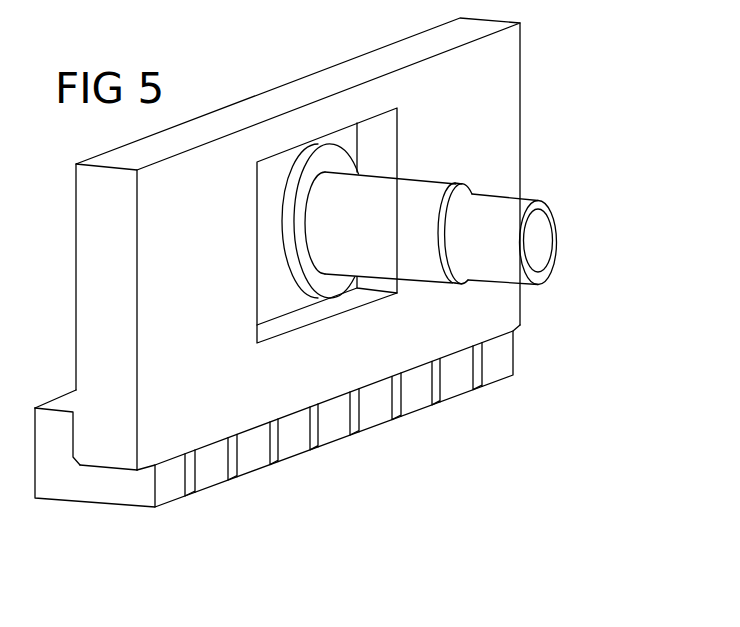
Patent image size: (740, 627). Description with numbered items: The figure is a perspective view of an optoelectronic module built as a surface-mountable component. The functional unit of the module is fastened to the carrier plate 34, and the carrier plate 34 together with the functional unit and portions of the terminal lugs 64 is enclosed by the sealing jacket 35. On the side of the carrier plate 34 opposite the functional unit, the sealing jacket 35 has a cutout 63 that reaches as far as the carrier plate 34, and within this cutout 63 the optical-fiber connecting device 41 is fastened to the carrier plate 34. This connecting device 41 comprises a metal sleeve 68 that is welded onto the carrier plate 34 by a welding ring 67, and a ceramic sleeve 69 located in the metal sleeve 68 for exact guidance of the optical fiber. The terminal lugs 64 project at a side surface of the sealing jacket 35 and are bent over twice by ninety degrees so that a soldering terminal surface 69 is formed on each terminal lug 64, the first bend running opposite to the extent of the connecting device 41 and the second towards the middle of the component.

The carrier plate 34 is at (276, 294).
The sealing jacket 35 is at (500, 60).
The optical-fiber connecting device 41 is at (563, 304).
The cutout 63 is at (256, 264).
The terminal lugs 64 is at (170, 493).
The welding ring 67 is at (326, 146).
The metal sleeve 68 is at (408, 208).
The ceramic sleeve 69 is at (543, 203).